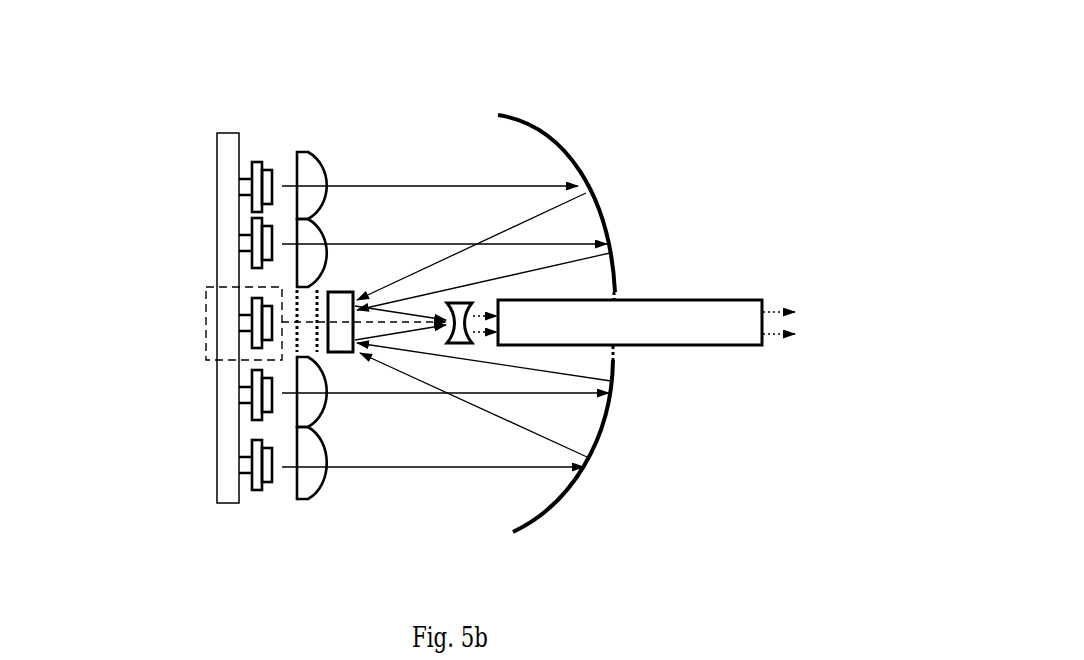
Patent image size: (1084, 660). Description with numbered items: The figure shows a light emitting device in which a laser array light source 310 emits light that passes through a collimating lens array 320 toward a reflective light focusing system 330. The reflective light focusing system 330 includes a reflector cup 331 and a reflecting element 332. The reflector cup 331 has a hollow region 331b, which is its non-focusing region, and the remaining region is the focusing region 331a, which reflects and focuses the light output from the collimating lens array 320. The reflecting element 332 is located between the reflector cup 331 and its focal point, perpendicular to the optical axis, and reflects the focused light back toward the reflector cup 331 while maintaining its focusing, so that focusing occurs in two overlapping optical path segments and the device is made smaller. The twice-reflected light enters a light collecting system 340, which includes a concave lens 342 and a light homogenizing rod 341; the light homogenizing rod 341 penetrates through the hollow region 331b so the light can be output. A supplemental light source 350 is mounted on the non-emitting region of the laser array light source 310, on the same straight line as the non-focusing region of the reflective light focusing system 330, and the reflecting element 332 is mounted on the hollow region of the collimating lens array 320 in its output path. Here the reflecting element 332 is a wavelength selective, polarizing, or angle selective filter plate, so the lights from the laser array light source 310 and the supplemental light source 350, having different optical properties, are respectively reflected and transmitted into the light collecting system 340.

The laser array light source 310 is at (217, 185).
The collimating lens array 320 is at (317, 482).
The reflective light focusing system 330 is at (815, 125).
The reflector cup 331 is at (651, 318).
The focusing region 331a is at (583, 163).
The hollow region 331b is at (617, 290).
The reflecting element 332 is at (333, 320).
The light collecting system 340 is at (517, 522).
The light homogenizing rod 341 is at (525, 345).
The concave lens 342 is at (453, 343).
The supplemental light source 350 is at (206, 320).